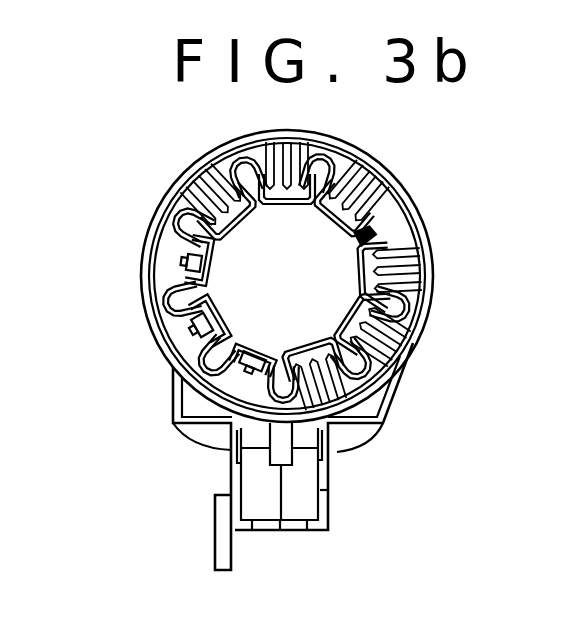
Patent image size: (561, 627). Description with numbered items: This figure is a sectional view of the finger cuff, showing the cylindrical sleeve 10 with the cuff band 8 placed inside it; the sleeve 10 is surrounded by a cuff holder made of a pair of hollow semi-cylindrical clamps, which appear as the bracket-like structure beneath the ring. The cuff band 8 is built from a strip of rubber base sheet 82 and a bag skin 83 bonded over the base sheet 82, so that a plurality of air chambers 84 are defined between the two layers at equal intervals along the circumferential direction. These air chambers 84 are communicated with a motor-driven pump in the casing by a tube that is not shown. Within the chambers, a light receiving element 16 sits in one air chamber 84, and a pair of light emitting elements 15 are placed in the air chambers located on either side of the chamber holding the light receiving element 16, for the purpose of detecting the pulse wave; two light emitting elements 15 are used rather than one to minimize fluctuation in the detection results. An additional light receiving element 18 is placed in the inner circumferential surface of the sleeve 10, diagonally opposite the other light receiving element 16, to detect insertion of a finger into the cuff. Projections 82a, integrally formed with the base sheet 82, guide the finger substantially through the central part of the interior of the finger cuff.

The cuff band 8 is at (408, 288).
The cylindrical sleeve 10 is at (413, 340).
The light emitting element 15 is at (187, 262).
The light receiving element 16 is at (192, 322).
The additional light receiving element 18 is at (378, 222).
The base sheet 82 is at (378, 208).
The projections 82a is at (210, 196).
The bag skin 83 is at (340, 160).
The air chambers 84 is at (255, 152).